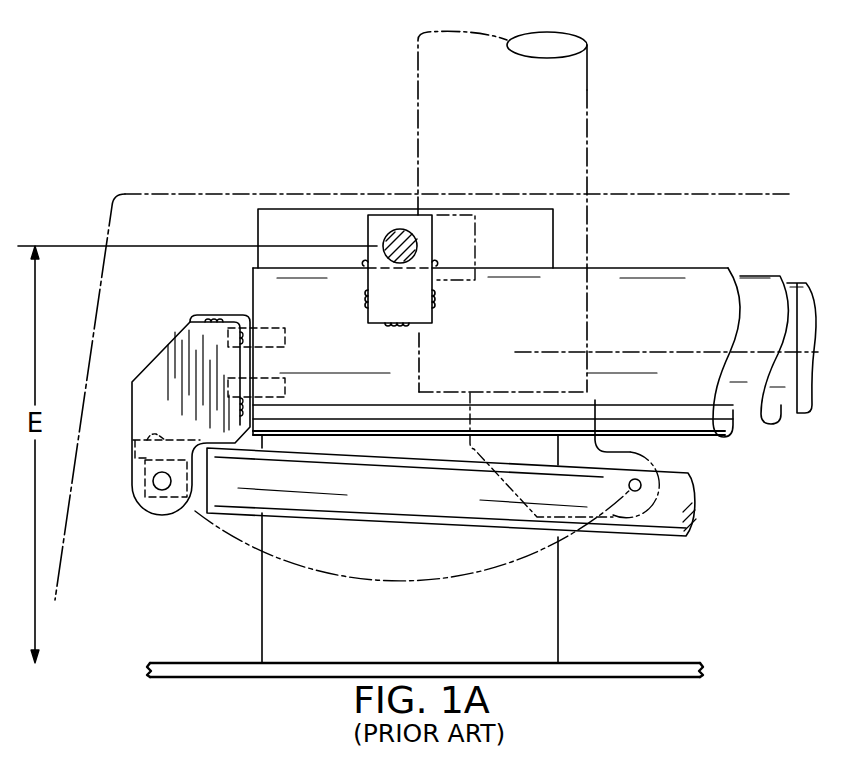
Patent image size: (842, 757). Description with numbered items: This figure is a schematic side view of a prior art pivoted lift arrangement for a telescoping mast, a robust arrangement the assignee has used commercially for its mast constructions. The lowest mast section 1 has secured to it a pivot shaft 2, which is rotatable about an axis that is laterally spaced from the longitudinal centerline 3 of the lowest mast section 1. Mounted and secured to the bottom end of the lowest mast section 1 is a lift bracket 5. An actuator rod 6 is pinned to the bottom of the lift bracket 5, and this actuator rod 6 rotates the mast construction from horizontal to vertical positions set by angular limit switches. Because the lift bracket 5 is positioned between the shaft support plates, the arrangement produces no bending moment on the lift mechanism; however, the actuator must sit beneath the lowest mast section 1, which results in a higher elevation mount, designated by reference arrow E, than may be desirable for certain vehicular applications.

The lowest mast section 1 is at (587, 88).
The pivot shaft 2 is at (393, 237).
The longitudinal centerline 3 is at (740, 352).
The lift bracket 5 is at (186, 344).
The actuator rod 6 is at (158, 477).